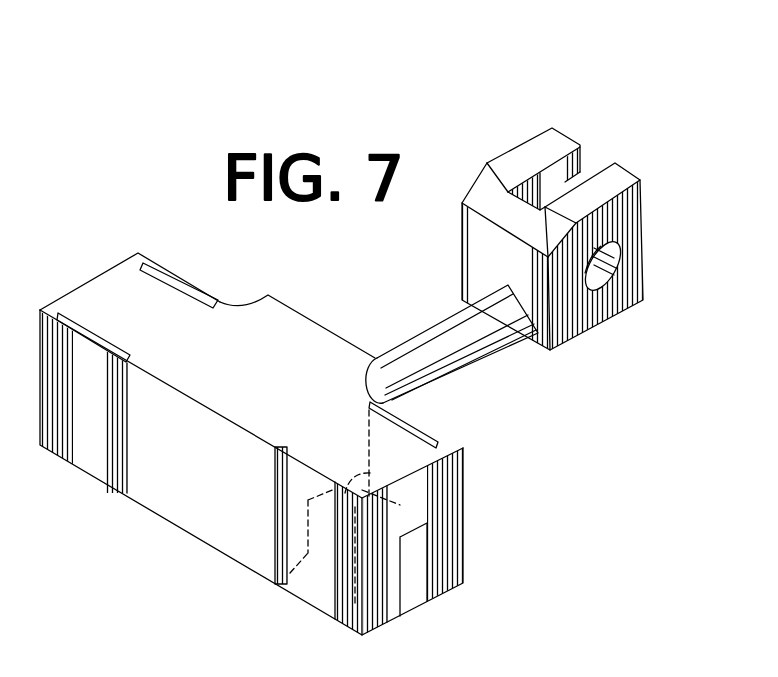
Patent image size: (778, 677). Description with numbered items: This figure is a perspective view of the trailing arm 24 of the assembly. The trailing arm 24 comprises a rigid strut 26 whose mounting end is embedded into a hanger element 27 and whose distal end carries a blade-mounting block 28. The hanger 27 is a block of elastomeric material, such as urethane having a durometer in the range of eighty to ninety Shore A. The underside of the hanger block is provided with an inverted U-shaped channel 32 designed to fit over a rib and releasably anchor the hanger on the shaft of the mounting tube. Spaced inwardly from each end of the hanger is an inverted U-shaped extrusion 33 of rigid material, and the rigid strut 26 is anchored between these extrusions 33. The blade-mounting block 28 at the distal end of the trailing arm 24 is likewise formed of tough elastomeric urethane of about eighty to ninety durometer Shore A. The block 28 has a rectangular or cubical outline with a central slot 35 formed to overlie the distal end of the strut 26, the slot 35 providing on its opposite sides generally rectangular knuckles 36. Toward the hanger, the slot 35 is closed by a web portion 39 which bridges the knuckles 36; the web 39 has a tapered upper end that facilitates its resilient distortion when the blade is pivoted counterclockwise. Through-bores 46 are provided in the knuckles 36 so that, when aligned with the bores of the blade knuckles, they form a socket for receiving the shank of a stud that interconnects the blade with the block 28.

The trailing arm 24 is at (453, 350).
The rigid strut 26 is at (477, 383).
The hanger element 27 is at (187, 495).
The blade-mounting block 28 is at (564, 218).
The inverted U-shaped channel 32 is at (463, 566).
The inverted U-shaped extrusion 33 is at (177, 275).
The central slot 35 is at (593, 167).
The knuckles 36 is at (553, 143).
The web portion 39 is at (515, 208).
The through-bores 46 is at (589, 272).